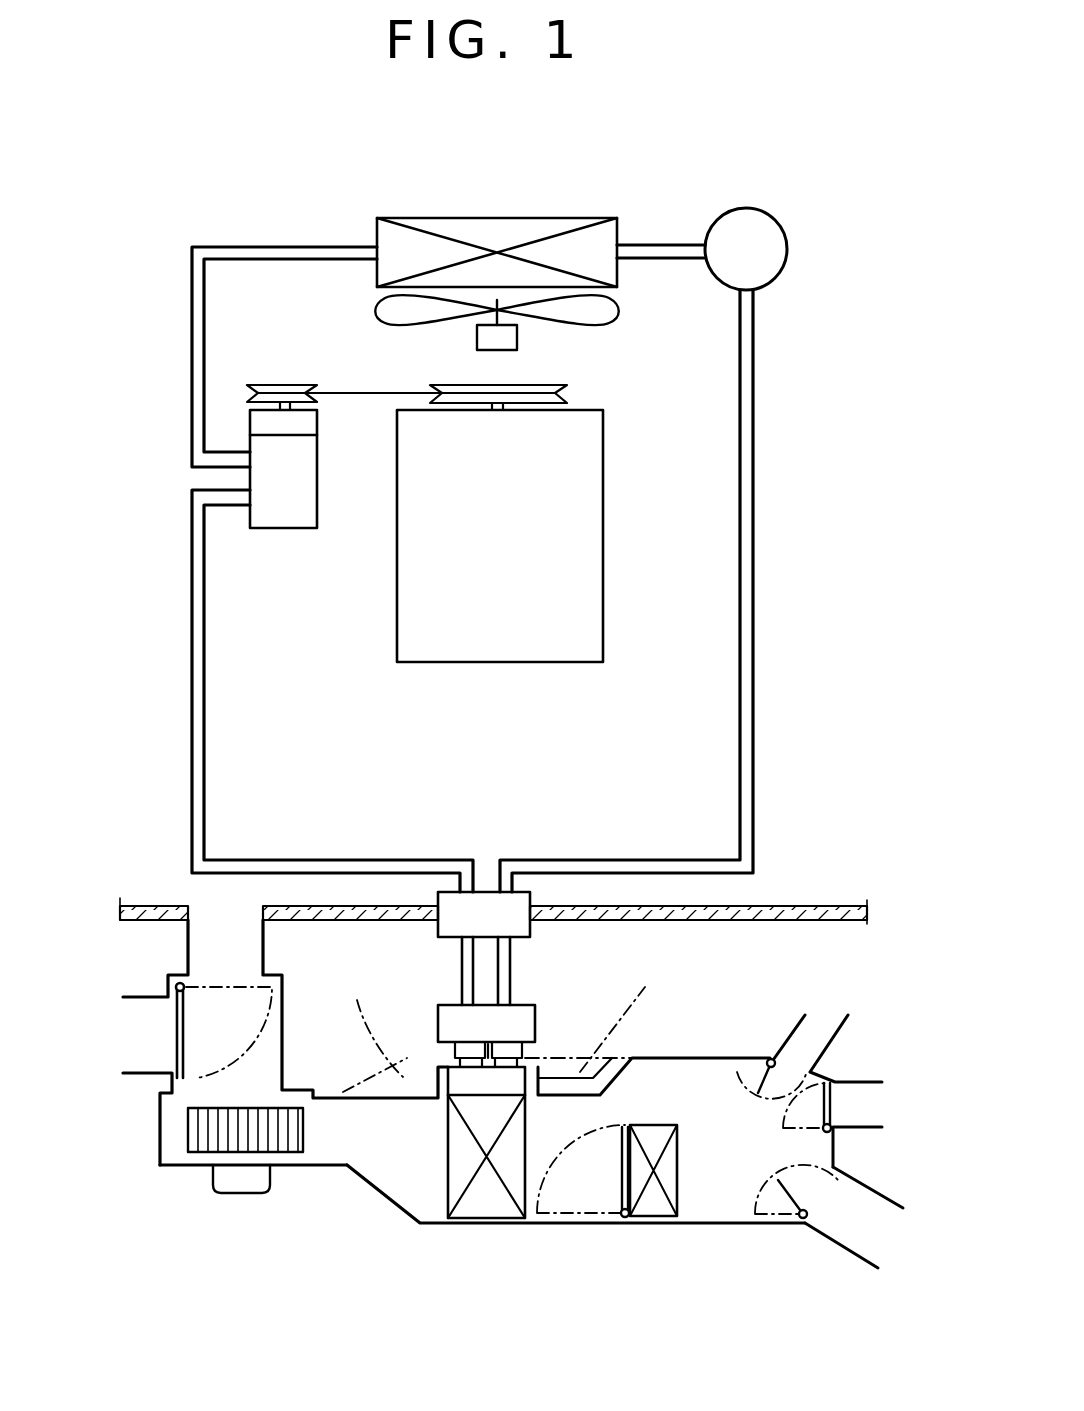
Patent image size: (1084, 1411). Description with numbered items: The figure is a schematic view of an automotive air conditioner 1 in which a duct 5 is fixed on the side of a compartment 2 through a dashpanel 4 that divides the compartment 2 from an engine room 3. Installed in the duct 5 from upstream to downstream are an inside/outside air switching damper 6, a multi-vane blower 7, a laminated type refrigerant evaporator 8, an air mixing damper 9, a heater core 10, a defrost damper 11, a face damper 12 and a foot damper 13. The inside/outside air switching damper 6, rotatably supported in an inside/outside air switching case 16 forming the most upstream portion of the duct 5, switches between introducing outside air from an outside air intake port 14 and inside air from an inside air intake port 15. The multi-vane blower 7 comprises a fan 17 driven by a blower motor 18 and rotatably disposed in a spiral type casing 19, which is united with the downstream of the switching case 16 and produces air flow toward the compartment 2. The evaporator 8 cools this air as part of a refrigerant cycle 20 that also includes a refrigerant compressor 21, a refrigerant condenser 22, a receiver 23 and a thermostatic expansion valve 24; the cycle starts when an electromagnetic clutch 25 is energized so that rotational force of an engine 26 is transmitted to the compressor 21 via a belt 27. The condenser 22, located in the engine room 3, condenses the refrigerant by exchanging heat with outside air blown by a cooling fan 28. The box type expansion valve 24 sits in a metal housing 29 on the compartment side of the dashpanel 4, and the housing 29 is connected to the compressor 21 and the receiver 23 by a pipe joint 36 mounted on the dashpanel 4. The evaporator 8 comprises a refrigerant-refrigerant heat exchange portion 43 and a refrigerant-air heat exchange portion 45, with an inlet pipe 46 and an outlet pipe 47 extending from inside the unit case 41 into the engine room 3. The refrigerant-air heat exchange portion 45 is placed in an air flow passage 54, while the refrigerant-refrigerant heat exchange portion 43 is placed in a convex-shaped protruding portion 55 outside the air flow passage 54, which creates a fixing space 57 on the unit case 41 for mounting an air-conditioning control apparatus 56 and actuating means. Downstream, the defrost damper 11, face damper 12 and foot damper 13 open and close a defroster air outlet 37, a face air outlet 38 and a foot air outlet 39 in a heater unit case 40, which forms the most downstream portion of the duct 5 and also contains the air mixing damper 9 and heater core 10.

The automotive air conditioner 1 is at (190, 203).
The compartment 2 is at (688, 967).
The engine room 3 is at (688, 817).
The dashpanel 4 is at (832, 905).
The duct 5 is at (418, 1242).
The inside/outside air switching damper 6 is at (177, 1048).
The multi-vane blower 7 is at (205, 1212).
The laminated type refrigerant evaporator 8 is at (428, 1196).
The air mixing damper 9 is at (620, 1187).
The heater core 10 is at (657, 1207).
The defrost damper 11 is at (766, 1059).
The face damper 12 is at (838, 1080).
The foot damper 13 is at (777, 1202).
The outside air intake port 14 is at (217, 946).
The inside air intake port 15 is at (145, 1010).
The inside/outside air switching case 16 is at (285, 1030).
The fan 17 is at (183, 1128).
The blower motor 18 is at (238, 1186).
The spiral type casing 19 is at (157, 1160).
The refrigerant cycle 20 is at (172, 298).
The refrigerant compressor 21 is at (290, 520).
The refrigerant condenser 22 is at (502, 232).
The receiver 23 is at (747, 226).
The thermostatic expansion valve 24 is at (523, 1000).
The electromagnetic clutch 25 is at (305, 422).
The engine 26 is at (410, 633).
The belt 27 is at (360, 393).
The cooling fan 28 is at (602, 314).
The metal housing 29 is at (452, 1003).
The pipe joint 36 is at (487, 900).
The defroster air outlet 37 is at (818, 1026).
The face air outlet 38 is at (872, 1108).
The foot air outlet 39 is at (885, 1240).
The heater unit case 40 is at (710, 1225).
The unit case 41 is at (468, 1224).
The refrigerant-refrigerant heat exchange portion 43 is at (463, 1080).
The refrigerant-air heat exchange portion 45 is at (498, 1205).
The inlet pipe 46 is at (508, 1050).
The outlet pipe 47 is at (467, 1050).
The air flow passage 54 is at (368, 1157).
The protruding portion 55 is at (535, 1063).
The air-conditioning control apparatus 56 is at (590, 1082).
The fixing space 57 is at (501, 1030).